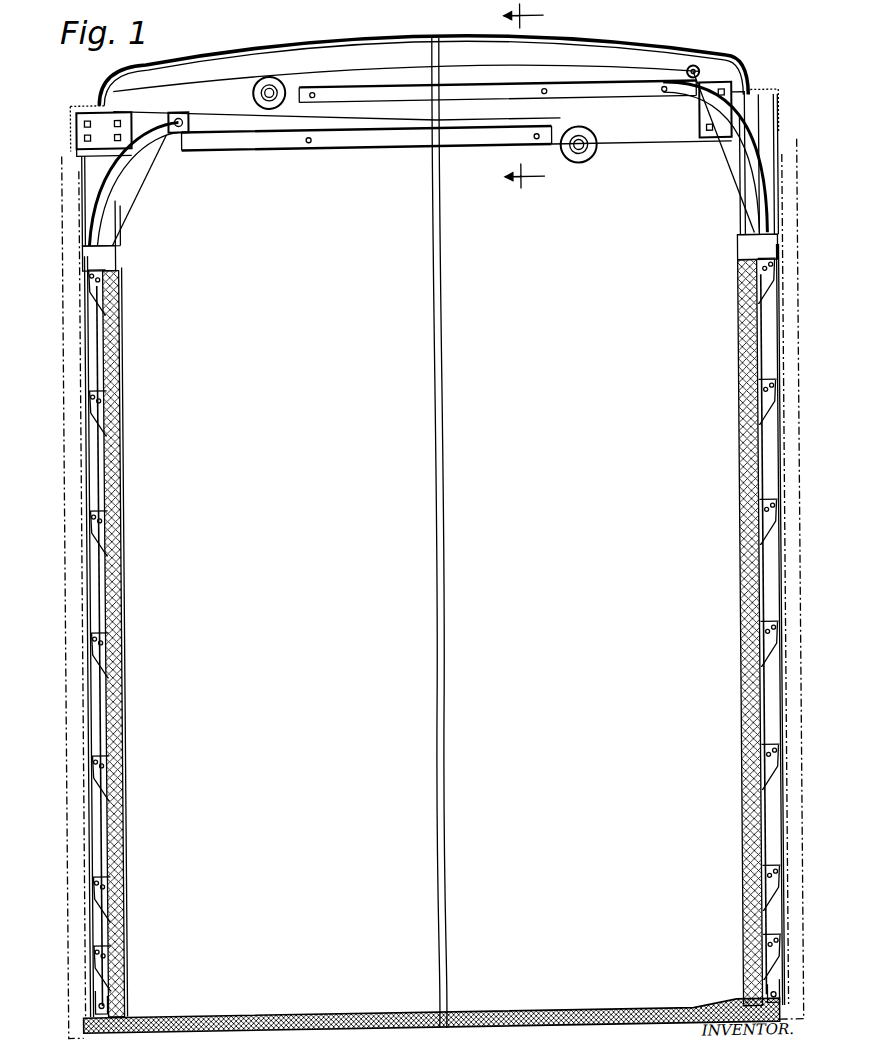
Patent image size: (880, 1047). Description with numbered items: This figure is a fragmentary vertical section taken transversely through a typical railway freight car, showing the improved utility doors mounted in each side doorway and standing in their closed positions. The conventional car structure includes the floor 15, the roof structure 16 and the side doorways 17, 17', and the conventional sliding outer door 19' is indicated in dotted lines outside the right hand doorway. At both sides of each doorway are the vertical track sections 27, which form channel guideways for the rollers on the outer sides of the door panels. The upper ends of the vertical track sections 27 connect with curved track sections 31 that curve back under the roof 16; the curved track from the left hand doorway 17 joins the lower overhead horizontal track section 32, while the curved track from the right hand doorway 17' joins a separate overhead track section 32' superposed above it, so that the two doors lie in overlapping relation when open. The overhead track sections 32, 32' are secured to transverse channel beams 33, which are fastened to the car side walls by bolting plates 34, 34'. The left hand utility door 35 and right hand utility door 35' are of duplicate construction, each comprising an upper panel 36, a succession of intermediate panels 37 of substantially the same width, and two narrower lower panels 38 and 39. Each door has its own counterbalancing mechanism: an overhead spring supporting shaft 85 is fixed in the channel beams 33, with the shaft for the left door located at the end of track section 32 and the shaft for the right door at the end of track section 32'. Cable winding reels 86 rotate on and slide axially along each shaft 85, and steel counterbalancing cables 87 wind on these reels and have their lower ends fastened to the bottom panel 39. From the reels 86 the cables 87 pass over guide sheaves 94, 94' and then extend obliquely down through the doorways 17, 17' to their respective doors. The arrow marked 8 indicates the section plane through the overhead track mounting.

The section line 8- 8 is at (524, 96).
The floor 15 is at (336, 1028).
The roof structure 16 is at (372, 45).
The left hand side doorway 17 is at (70, 572).
The right hand side doorway 17' is at (784, 114).
The conventional outer door 19' is at (803, 578).
The vertical track section 27 is at (98, 256).
The curved track section 31 is at (95, 186).
The lower overhead horizontal track section 32 is at (367, 153).
The upper overhead horizontal track section 32' is at (498, 53).
The transverse channel beam 33 is at (199, 96).
The bolting plate 34 is at (117, 112).
The bolting plate 34' is at (720, 80).
The left hand utility door 35 is at (72, 646).
The right hand utility door 35' is at (798, 633).
The upper panel 36 is at (118, 333).
The intermediate panel 37 is at (746, 836).
The lower panel 38 is at (126, 922).
The bottom panel 39 is at (128, 968).
The spring supporting shaft 85 is at (271, 80).
The cable winding reel 86 is at (257, 94).
The counterbalancing cable 87 is at (362, 70).
The guide sheave 94 is at (160, 179).
The guide sheave 94' is at (713, 119).